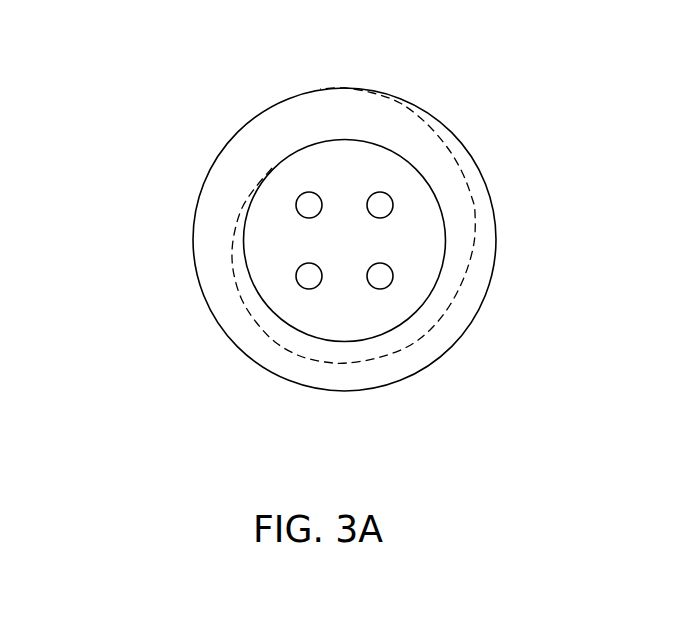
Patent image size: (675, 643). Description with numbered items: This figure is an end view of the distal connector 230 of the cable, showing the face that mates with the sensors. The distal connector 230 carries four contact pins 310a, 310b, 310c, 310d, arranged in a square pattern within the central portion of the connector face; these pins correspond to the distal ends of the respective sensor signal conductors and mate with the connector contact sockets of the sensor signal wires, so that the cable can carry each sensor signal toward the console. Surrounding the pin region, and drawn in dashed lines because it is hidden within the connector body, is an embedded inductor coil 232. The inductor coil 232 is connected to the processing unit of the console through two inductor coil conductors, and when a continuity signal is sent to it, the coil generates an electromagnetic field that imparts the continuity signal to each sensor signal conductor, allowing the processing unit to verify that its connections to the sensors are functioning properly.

The distal connector 230 is at (193, 55).
The embedded inductor coil 232 is at (477, 237).
The contact pin 310a is at (318, 192).
The contact pin 310b is at (388, 192).
The contact pin 310c is at (387, 288).
The contact pin 310d is at (307, 288).